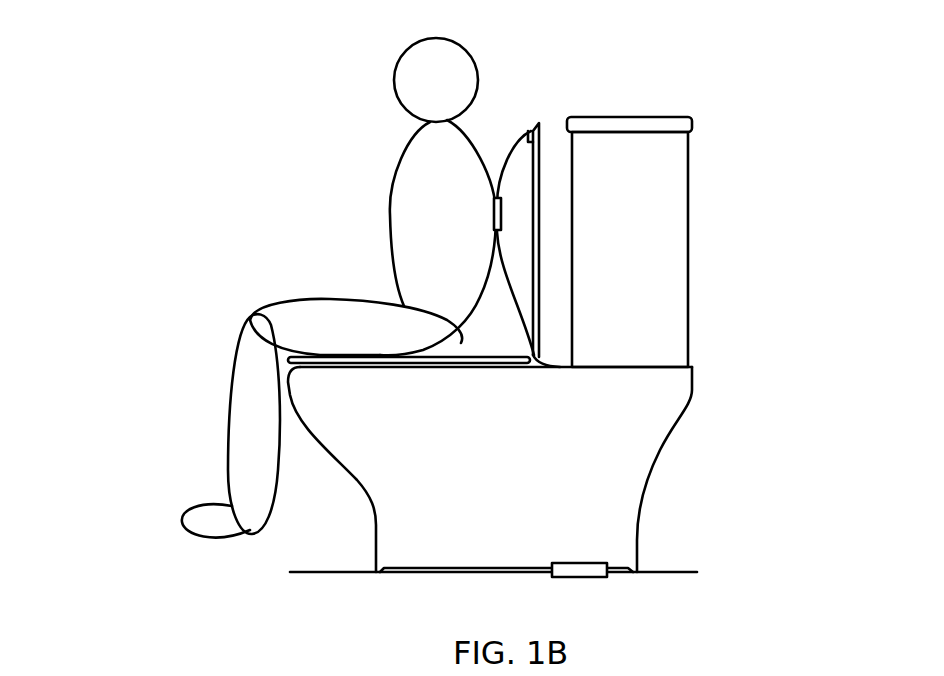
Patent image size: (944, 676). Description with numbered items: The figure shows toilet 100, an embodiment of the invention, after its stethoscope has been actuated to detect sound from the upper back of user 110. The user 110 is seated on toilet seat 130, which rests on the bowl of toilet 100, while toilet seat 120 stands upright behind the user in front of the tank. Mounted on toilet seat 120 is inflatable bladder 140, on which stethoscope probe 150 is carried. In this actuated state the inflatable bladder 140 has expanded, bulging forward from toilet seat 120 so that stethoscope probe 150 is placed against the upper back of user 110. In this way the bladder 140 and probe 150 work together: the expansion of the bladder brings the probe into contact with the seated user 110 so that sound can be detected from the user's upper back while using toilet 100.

The toilet 100 is at (118, 60).
The user 110 is at (393, 225).
The toilet seat 120 is at (537, 235).
The toilet seat 130 is at (377, 362).
The inflatable bladder 140 is at (514, 168).
The stethoscope probe 150 is at (494, 213).